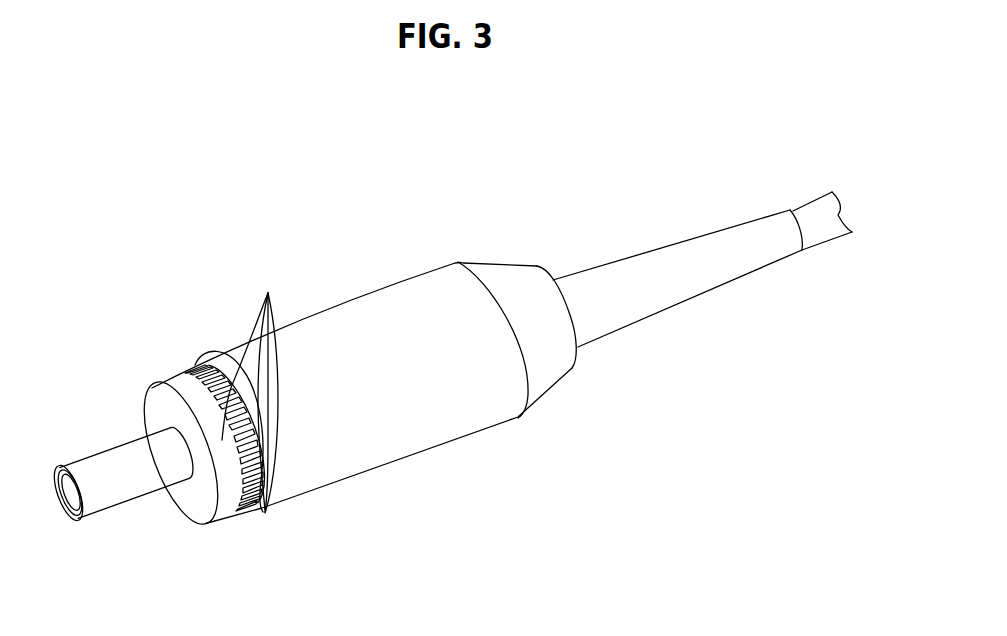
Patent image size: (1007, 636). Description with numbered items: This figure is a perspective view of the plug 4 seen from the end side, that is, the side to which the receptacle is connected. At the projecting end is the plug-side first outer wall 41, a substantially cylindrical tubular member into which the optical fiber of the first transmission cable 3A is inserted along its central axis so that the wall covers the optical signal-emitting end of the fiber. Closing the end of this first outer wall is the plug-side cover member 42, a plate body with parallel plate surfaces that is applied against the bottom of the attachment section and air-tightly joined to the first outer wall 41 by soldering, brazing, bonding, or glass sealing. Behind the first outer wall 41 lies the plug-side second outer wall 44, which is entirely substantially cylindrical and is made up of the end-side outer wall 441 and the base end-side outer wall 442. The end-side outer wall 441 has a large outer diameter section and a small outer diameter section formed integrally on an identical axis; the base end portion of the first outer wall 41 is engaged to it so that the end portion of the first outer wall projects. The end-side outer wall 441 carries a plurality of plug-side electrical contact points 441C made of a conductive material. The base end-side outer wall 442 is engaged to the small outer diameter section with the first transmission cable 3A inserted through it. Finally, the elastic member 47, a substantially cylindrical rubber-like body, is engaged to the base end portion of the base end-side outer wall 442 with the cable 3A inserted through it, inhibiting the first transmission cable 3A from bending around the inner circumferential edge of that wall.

The plug 4 is at (433, 158).
The plug-side first outer wall 41 is at (110, 452).
The plug-side cover member 42 is at (67, 492).
The plug-side second outer wall 44 is at (369, 558).
The end-side outer wall 441 is at (265, 492).
The plug-side electrical contact points 441C is at (250, 391).
The base end-side outer wall 442 is at (333, 478).
The elastic member 47 is at (690, 293).
The first transmission cable 3A is at (824, 227).